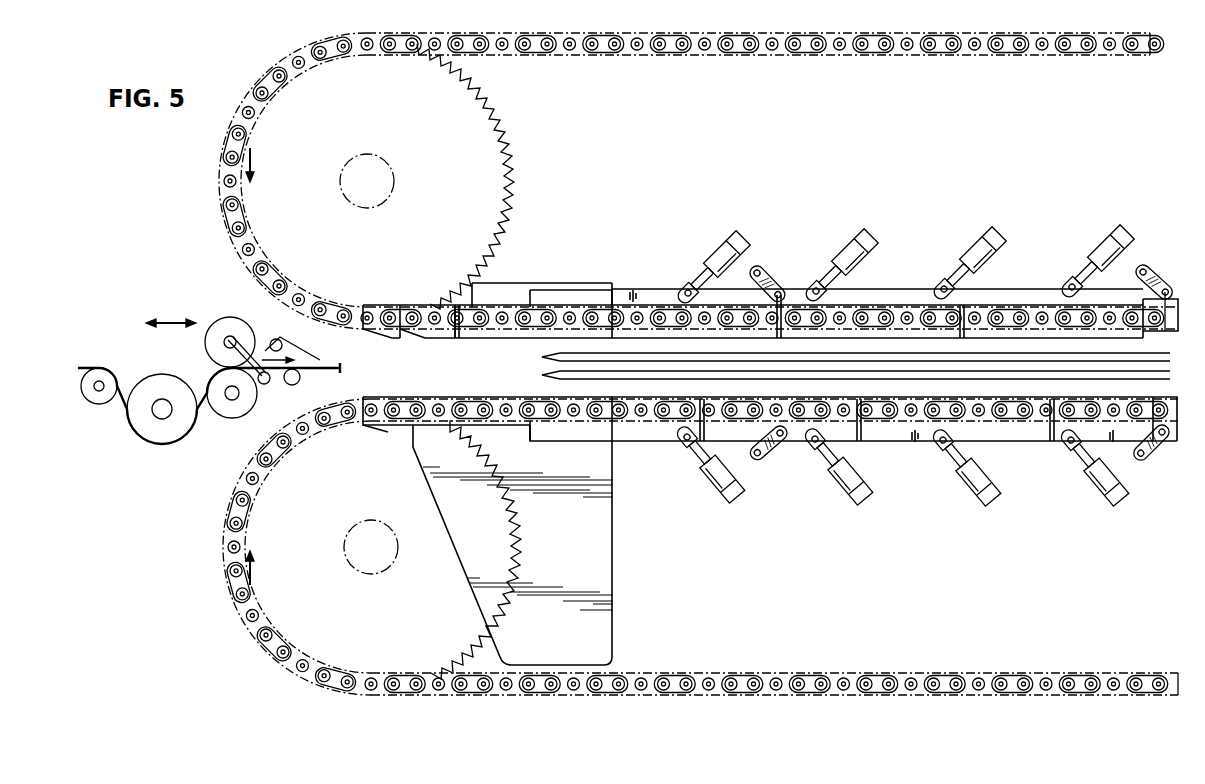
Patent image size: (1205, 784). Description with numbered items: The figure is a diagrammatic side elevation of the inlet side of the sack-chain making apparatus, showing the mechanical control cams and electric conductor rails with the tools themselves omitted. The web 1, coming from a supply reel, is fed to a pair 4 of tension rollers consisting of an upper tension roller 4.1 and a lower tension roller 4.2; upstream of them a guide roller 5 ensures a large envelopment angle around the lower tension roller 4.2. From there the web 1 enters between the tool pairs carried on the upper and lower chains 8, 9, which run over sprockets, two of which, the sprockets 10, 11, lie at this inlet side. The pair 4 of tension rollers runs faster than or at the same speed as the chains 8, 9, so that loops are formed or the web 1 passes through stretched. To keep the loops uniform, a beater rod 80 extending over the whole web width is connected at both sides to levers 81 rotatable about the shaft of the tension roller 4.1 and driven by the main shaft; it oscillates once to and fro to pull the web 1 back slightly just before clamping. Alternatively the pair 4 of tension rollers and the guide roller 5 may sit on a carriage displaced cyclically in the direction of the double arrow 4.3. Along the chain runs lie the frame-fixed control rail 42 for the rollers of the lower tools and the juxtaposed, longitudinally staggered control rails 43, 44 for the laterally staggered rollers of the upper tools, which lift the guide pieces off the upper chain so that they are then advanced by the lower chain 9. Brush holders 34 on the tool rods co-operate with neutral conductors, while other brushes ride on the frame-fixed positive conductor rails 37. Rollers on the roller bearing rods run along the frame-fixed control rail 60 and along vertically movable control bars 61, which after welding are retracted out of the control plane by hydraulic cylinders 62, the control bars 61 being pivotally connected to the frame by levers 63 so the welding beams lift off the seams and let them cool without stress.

The web 1 is at (86, 366).
The pair of tension rollers 4 is at (182, 260).
The tension roller 4.1 is at (229, 328).
The lower tension roller 4.2 is at (232, 418).
The double arrow 4.3 is at (171, 322).
The guide roller 5 is at (162, 444).
The chain 8 is at (696, 50).
The chain 9 is at (700, 675).
The sprocket 10 is at (483, 118).
The sprocket 11 is at (480, 640).
The brush holder 34 is at (556, 356).
The positive conductor rail 37 is at (556, 374).
The control rail 42 is at (386, 431).
The control rail 43 is at (388, 340).
The control rail 44 is at (440, 340).
The control rail 60 is at (493, 292).
The control bar 61 is at (645, 289).
The hydraulic cylinder 62 is at (727, 246).
The lever 63 is at (770, 276).
The beater rod 80 is at (267, 385).
The lever 81 is at (226, 355).